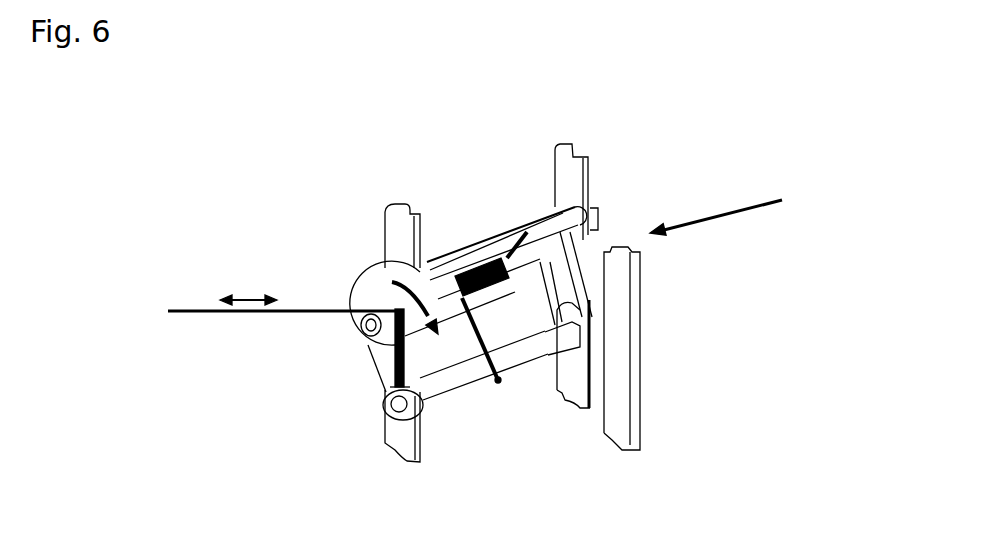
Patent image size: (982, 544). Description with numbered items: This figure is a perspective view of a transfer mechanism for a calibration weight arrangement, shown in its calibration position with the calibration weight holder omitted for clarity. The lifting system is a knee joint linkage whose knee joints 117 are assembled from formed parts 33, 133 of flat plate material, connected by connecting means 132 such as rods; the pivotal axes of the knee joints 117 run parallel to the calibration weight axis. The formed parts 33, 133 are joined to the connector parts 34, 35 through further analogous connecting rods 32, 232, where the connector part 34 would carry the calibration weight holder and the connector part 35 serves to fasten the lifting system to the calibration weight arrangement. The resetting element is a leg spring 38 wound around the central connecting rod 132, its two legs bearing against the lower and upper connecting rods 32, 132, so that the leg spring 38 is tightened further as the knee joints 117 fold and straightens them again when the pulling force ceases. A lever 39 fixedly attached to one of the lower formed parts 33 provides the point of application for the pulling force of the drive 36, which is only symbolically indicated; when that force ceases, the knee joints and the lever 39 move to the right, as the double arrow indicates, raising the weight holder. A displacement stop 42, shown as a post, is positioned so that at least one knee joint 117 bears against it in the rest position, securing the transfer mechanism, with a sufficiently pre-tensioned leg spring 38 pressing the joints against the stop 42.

The connecting means 32 is at (505, 340).
The formed part 33 is at (377, 367).
The connector part 34 is at (572, 178).
The connector part 35 is at (422, 456).
The drive 36 is at (197, 309).
The leg spring 38 is at (495, 303).
The lever 39 is at (388, 347).
The displacement stop 42 is at (613, 302).
The knee joint 117 is at (739, 212).
The connecting means 132 is at (535, 258).
The formed part 133 is at (384, 300).
The connecting means 232 is at (580, 218).